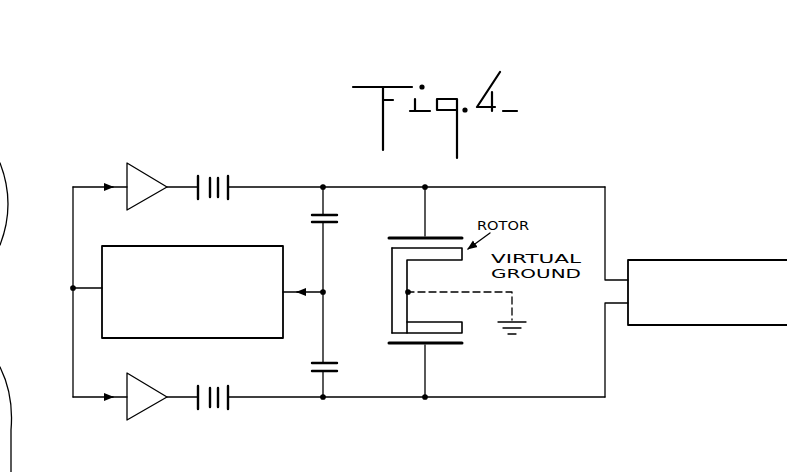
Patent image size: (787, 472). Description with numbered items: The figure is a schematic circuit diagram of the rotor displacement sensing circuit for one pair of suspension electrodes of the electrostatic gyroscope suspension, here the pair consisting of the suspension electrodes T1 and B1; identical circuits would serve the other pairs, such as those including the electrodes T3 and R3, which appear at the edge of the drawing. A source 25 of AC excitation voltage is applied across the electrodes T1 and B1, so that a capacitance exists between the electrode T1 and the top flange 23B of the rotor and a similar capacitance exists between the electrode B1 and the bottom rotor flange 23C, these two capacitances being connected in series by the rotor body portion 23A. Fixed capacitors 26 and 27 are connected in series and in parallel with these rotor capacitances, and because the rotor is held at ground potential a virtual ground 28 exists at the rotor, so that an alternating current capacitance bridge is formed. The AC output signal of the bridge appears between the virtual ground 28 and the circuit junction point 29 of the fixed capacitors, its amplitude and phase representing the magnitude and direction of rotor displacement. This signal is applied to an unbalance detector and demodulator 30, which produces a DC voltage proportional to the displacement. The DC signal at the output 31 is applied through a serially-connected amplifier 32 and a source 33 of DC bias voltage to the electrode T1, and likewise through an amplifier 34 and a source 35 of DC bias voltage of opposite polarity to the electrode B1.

The source of AC excitation voltage 25 is at (692, 260).
The fixed capacitor 26 is at (312, 218).
The fixed capacitor 27 is at (312, 367).
The virtual ground 28 is at (463, 292).
The circuit junction point 29 is at (323, 292).
The unbalance detector and demodulator 30 is at (165, 246).
The output 31 is at (73, 288).
The amplifier 32 is at (145, 163).
The source of DC bias voltage 33 is at (229, 178).
The amplifier 34 is at (139, 412).
The source of DC bias voltage 35 is at (228, 402).
The rotor body portion 23A is at (392, 308).
The top flange of the rotor 23B is at (420, 255).
The bottom rotor flange 23C is at (447, 328).
The suspension electrode T1 is at (408, 234).
The suspension electrode B1 is at (410, 345).
The suspension electrode T3 is at (0, 160).
The suspension electrode R3 is at (0, 350).